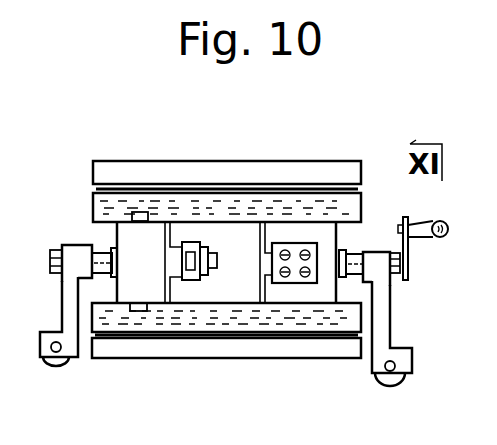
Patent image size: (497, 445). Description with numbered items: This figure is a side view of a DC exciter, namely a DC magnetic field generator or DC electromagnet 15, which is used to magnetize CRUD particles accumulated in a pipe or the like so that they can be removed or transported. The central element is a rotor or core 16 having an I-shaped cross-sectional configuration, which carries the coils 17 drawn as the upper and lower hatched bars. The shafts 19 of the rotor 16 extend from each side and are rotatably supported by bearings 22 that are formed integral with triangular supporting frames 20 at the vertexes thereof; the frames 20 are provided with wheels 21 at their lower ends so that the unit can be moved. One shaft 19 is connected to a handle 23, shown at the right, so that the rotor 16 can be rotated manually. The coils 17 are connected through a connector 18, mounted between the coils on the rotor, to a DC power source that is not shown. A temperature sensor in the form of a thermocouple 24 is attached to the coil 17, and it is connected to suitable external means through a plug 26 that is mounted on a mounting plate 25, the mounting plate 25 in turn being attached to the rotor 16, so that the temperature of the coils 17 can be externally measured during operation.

The DC electromagnet 15 is at (109, 152).
The rotor 16 is at (340, 167).
The coils 17 is at (95, 210).
The connector 18 is at (289, 285).
The shafts 19 is at (353, 251).
The triangular supporting frames 20 is at (63, 306).
The wheels 21 is at (53, 367).
The bearings 22 is at (72, 249).
The handle 23 is at (440, 242).
The thermocouple 24 is at (141, 312).
The mounting plate 25 is at (188, 283).
The plug 26 is at (208, 277).